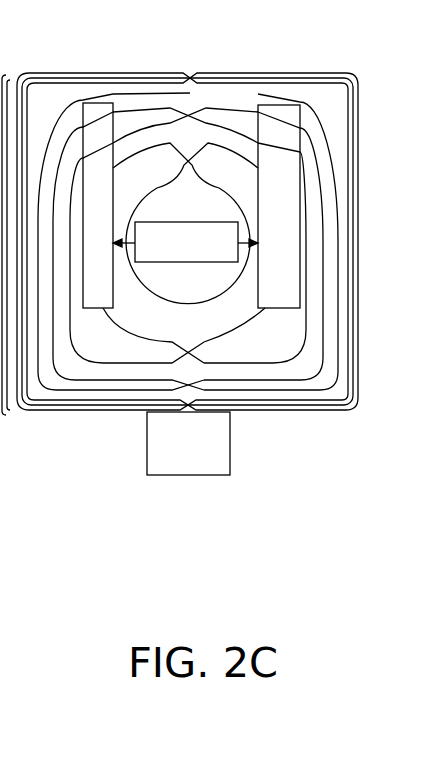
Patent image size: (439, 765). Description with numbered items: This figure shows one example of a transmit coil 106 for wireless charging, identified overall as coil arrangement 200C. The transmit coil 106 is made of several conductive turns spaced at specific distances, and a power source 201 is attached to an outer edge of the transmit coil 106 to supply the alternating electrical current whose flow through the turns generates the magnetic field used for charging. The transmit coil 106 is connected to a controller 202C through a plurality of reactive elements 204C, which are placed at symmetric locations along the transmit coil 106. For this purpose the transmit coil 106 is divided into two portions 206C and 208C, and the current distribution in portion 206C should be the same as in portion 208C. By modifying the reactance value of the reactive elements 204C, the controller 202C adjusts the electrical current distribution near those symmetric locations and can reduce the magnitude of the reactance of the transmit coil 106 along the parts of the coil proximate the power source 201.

The transmit coil 106 is at (360, 142).
The wireless power transfer coil assembly 200C is at (213, 321).
The power source 201 is at (181, 476).
The controller 202C is at (222, 264).
The reactive elements 204C is at (100, 308).
The first portion of the transmit coil 206C is at (190, 70).
The second portion of the transmit coil 208C is at (358, 70).